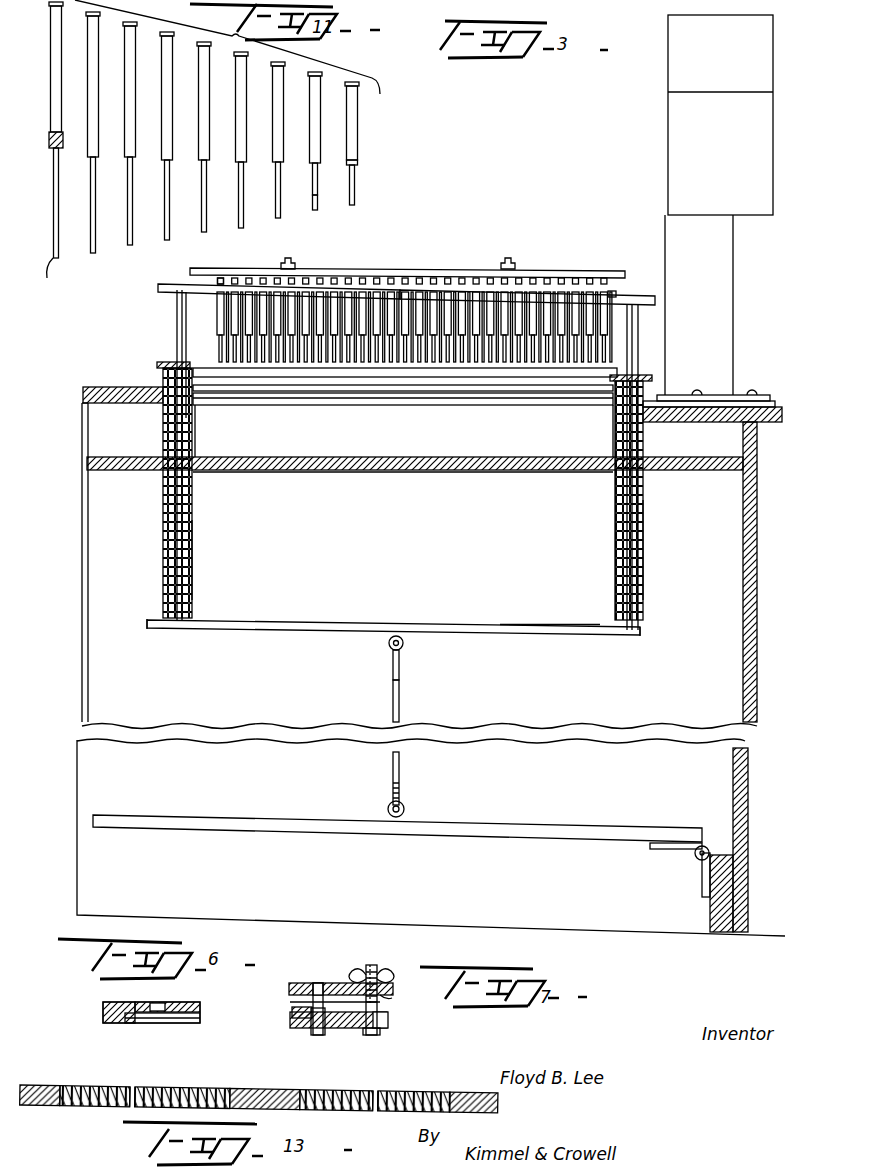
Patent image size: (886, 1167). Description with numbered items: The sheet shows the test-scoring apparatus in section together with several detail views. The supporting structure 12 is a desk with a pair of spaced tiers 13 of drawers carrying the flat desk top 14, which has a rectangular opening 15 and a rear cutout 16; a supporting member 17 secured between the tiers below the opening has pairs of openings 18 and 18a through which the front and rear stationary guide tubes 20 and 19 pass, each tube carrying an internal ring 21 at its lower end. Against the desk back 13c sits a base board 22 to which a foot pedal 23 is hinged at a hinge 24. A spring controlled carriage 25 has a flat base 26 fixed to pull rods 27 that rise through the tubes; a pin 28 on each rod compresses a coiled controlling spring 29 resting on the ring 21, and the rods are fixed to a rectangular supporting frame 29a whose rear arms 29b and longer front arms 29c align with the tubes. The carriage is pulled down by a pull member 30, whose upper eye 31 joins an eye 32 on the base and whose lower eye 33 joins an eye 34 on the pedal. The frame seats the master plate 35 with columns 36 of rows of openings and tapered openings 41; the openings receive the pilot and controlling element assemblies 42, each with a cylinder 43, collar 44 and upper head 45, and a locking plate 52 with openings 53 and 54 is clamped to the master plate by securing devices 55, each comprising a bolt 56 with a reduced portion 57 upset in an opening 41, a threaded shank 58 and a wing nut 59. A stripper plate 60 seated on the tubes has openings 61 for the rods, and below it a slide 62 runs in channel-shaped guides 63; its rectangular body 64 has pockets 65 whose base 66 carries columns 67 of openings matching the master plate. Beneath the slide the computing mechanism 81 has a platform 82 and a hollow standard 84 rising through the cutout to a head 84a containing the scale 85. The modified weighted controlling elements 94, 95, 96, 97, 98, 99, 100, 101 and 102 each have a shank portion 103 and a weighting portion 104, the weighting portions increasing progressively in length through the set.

In FIG. 3, the supporting structure 12 is at (74, 604).
In FIG. 3, the tiers of drawers 13 is at (82, 545).
In FIG. 3, the back of the desk 13c is at (752, 643).
In FIG. 3, the desk top 14 is at (84, 405).
In FIG. 3, the rectangular opening 15 is at (150, 387).
In FIG. 3, the cutout 16 is at (758, 425).
In FIG. 3, the supporting member 17 is at (456, 472).
In FIG. 3, the openings 18 is at (162, 476).
In FIG. 3, the openings 18a is at (616, 496).
In FIG. 3, the rear vertical stationary guide tubes 19 is at (642, 536).
In FIG. 3, the front vertical stationary guide tubes 20 is at (192, 580).
In FIG. 3, the internal ring 21 is at (180, 630).
In FIG. 3, the base board 22 is at (710, 915).
In FIG. 3, the foot pedal 23 is at (508, 837).
In FIG. 3, the hinge 24 is at (694, 856).
In FIG. 3, the carriage 25 is at (324, 641).
In FIG. 3, the flat base 26 is at (550, 646).
In FIG. 3, the pull rods 27 is at (176, 333).
In FIG. 3, the pin 28 is at (162, 418).
In FIG. 3, the coiled controlling spring 29 is at (192, 549).
In FIG. 3, the rectangular supporting frame 29a is at (618, 297).
In FIG. 6, the rectangular supporting frame 29a is at (113, 1025).
In FIG. 3, the rear inclined apertured arms 29b is at (657, 303).
In FIG. 3, the front inclined apertured arms 29c is at (256, 303).
In FIG. 3, the pull member 30 is at (400, 710).
In FIG. 3, the eye 31 is at (393, 658).
In FIG. 3, the eye 32 is at (405, 646).
In FIG. 3, the eye 33 is at (402, 802).
In FIG. 3, the eye 34 is at (406, 810).
In FIG. 6, the master plate 35 is at (138, 1016).
In FIG. 6, the column of rows of openings 36 is at (153, 1008).
In FIG. 7, the tapered openings 41 is at (382, 1015).
In FIG. 3, the combined pilot and controlling element assemblies 42 is at (587, 333).
In FIG. 7, the vertical cylinder 43 is at (313, 1034).
In FIG. 7, the peripheral collar 44 is at (286, 1012).
In FIG. 7, the upper head 45 is at (290, 993).
In FIG. 3, the locking plate 52 is at (216, 261).
In FIG. 7, the locking plate 52 is at (332, 983).
In FIG. 7, the openings 53 is at (318, 983).
In FIG. 3, the openings 54 is at (226, 276).
In FIG. 7, the openings 54 is at (392, 998).
In FIG. 3, the securing devices 55 is at (288, 262).
In FIG. 7, the securing devices 55 is at (368, 1036).
In FIG. 7, the bolt 56 is at (373, 968).
In FIG. 7, the reduced portion 57 is at (360, 1031).
In FIG. 7, the threaded shank 58 is at (380, 968).
In FIG. 7, the wing nut 59 is at (352, 968).
In FIG. 3, the stripper plate 60 is at (590, 372).
In FIG. 3, the openings 61 is at (187, 363).
In FIG. 3, the reciprocatory slide 62 is at (364, 406).
In FIG. 13, the reciprocatory slide 62 is at (153, 1085).
In FIG. 3, the channel-shaped guides 63 is at (205, 418).
In FIG. 3, the rectangular body 64 is at (511, 392).
In FIG. 13, the pockets 65 is at (448, 1092).
In FIG. 13, the base of pocket 66 is at (75, 1085).
In FIG. 13, the columns of rows of openings 67 is at (228, 1107).
In FIG. 3, the computing mechanism 81 is at (682, 165).
In FIG. 3, the platform 82 is at (410, 406).
In FIG. 3, the hollow standard 84 is at (735, 315).
In FIG. 3, the hollow head 84a is at (680, 112).
In FIG. 3, the scale 85 is at (540, 474).
In FIG. 11, the weighted controlling element 94 is at (359, 133).
In FIG. 11, the weighted controlling element 95 is at (321, 97).
In FIG. 11, the weighted controlling element 96 is at (284, 92).
In FIG. 11, the weighted controlling element 97 is at (248, 124).
In FIG. 11, the weighted controlling element 98 is at (211, 92).
In FIG. 11, the weighted controlling element 99 is at (176, 72).
In FIG. 11, the weighted controlling element 100 is at (140, 66).
In FIG. 11, the weighted controlling element 101 is at (98, 90).
In FIG. 11, the weighted controlling element 102 is at (59, 112).
In FIG. 11, the shank portion 103 is at (60, 160).
In FIG. 11, the weighting portion 104 is at (49, 245).